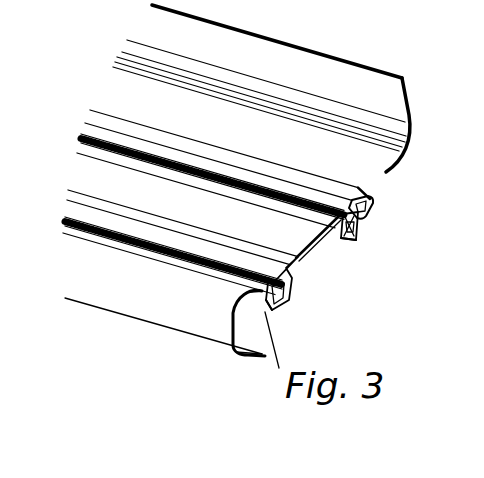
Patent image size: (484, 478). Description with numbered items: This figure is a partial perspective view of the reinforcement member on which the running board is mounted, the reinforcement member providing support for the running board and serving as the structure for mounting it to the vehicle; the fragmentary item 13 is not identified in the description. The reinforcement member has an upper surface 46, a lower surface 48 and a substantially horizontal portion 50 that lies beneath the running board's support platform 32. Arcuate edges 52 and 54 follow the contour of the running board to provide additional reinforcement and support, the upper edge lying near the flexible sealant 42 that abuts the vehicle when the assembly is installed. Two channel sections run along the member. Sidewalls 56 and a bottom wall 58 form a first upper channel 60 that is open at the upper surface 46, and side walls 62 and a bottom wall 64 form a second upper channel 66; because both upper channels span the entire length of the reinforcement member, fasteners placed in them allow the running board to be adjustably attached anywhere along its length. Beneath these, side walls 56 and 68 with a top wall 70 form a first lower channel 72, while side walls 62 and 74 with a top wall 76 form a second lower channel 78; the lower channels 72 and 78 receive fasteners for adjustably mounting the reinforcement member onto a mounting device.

The roof structure 13 is at (477, 295).
The support platform 32 is at (365, 148).
The flexible sealant 42 is at (222, 344).
The upper surface 46 is at (196, 219).
The lower surface 48 is at (219, 240).
The substantially horizontal portion 50 is at (254, 169).
The arcuate edge 52 is at (409, 100).
The arcuate edge 54 is at (237, 353).
The sidewall 56 is at (286, 287).
The bottom wall 58 is at (276, 305).
The first upper channel 60 is at (243, 252).
The side wall 62 is at (357, 213).
The bottom wall 64 is at (353, 240).
The second upper channel 66 is at (318, 207).
The side wall 68 is at (236, 310).
The top wall 70 is at (114, 243).
The first lower channel 72 is at (276, 362).
The side wall 74 is at (370, 204).
The top wall 76 is at (253, 170).
The second lower channel 78 is at (358, 222).